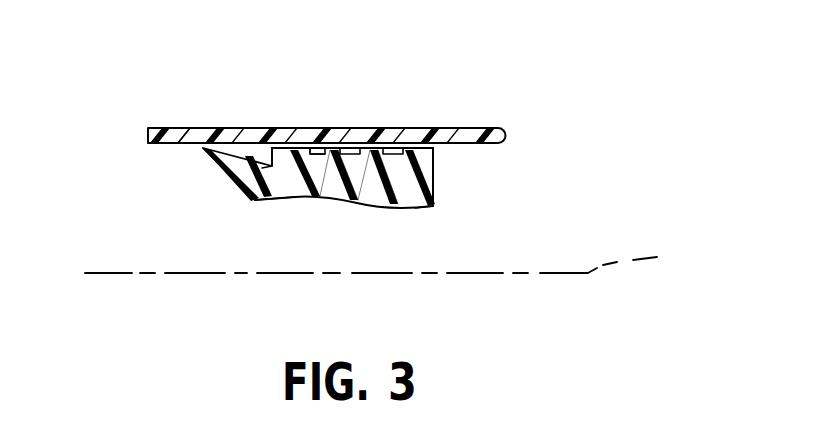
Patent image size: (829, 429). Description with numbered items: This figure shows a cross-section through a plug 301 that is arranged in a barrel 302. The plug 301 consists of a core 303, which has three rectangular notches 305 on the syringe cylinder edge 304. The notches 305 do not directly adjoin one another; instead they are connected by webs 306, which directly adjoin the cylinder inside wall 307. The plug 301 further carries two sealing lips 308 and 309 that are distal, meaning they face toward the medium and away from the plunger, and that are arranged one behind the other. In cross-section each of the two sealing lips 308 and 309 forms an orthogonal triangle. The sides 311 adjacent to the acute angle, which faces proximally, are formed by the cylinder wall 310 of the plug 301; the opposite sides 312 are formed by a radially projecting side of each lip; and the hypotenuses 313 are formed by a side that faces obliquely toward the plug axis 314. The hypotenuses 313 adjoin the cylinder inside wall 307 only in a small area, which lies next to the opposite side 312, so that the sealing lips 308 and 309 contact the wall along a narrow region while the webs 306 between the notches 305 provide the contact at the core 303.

The plug 301 is at (437, 181).
The barrel 302 is at (478, 128).
The core 303 is at (421, 207).
The syringe cylinder edge 304 is at (434, 152).
The notches 305 is at (217, 308).
The webs 306 is at (370, 288).
The cylinder inside wall 307 is at (212, 127).
The sealing lip 308 is at (238, 163).
The sealing lip 309 is at (245, 180).
The cylinder wall 310 is at (313, 148).
The sides 311 is at (278, 183).
The opposite sides 312 is at (262, 127).
The hypotenuses 313 is at (303, 150).
The plug axis 314 is at (399, 264).